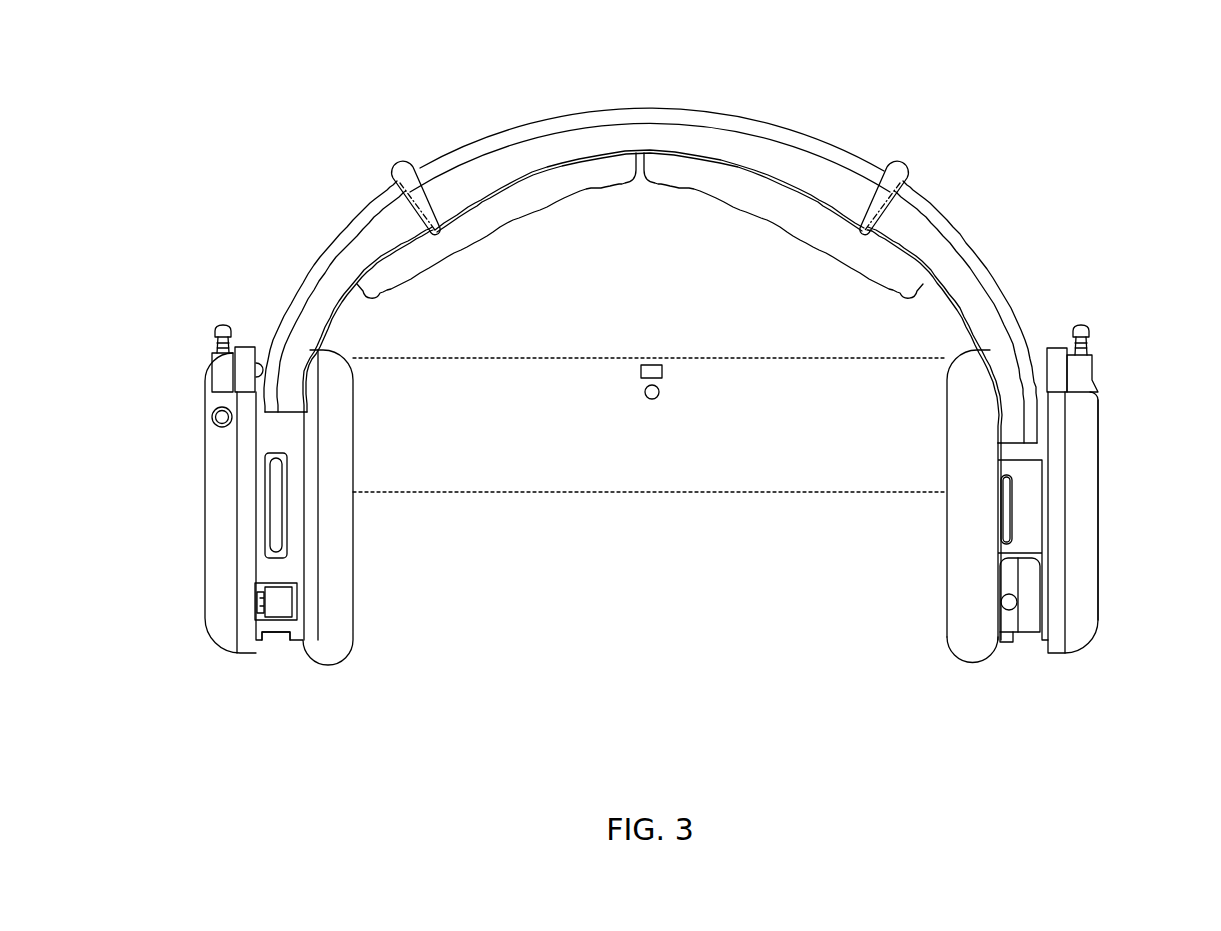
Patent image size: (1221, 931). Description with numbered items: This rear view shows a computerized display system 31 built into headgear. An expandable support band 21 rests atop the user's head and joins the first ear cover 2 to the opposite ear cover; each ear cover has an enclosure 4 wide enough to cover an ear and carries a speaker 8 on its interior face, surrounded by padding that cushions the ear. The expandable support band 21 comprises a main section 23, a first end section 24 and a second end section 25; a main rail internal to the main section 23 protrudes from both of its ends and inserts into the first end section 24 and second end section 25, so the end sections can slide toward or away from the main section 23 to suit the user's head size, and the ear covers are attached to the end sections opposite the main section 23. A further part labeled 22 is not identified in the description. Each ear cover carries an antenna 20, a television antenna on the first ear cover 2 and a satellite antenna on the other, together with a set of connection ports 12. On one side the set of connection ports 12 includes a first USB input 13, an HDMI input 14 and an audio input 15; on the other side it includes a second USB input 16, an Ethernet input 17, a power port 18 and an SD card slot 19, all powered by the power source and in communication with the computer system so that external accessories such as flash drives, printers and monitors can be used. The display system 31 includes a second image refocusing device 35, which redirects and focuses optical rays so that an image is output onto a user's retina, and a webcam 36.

The first ear cover 2 is at (1072, 417).
The enclosure 4 is at (203, 566).
The speaker 8 is at (325, 395).
The set of connection ports 12 is at (264, 441).
The first Universal Serial Bus (USB) input 13 is at (1028, 636).
The High-Definition Multimedia Interface (HDMI) input 14 is at (1003, 523).
The audio input 15 is at (1008, 572).
The second USB input 16 is at (277, 633).
The Ethernet input 17 is at (268, 603).
The power port 18 is at (213, 418).
The Secure Digital (SD) card slot 19 is at (278, 493).
The antenna 20 is at (224, 326).
The expandable support band 21 is at (645, 103).
The headband shell 22 is at (724, 118).
The main section 23 is at (398, 191).
The first end section 24 is at (953, 242).
The second end section 25 is at (363, 228).
The display system 31 is at (630, 332).
The second image refocusing device 35 is at (641, 374).
The webcam 36 is at (658, 391).